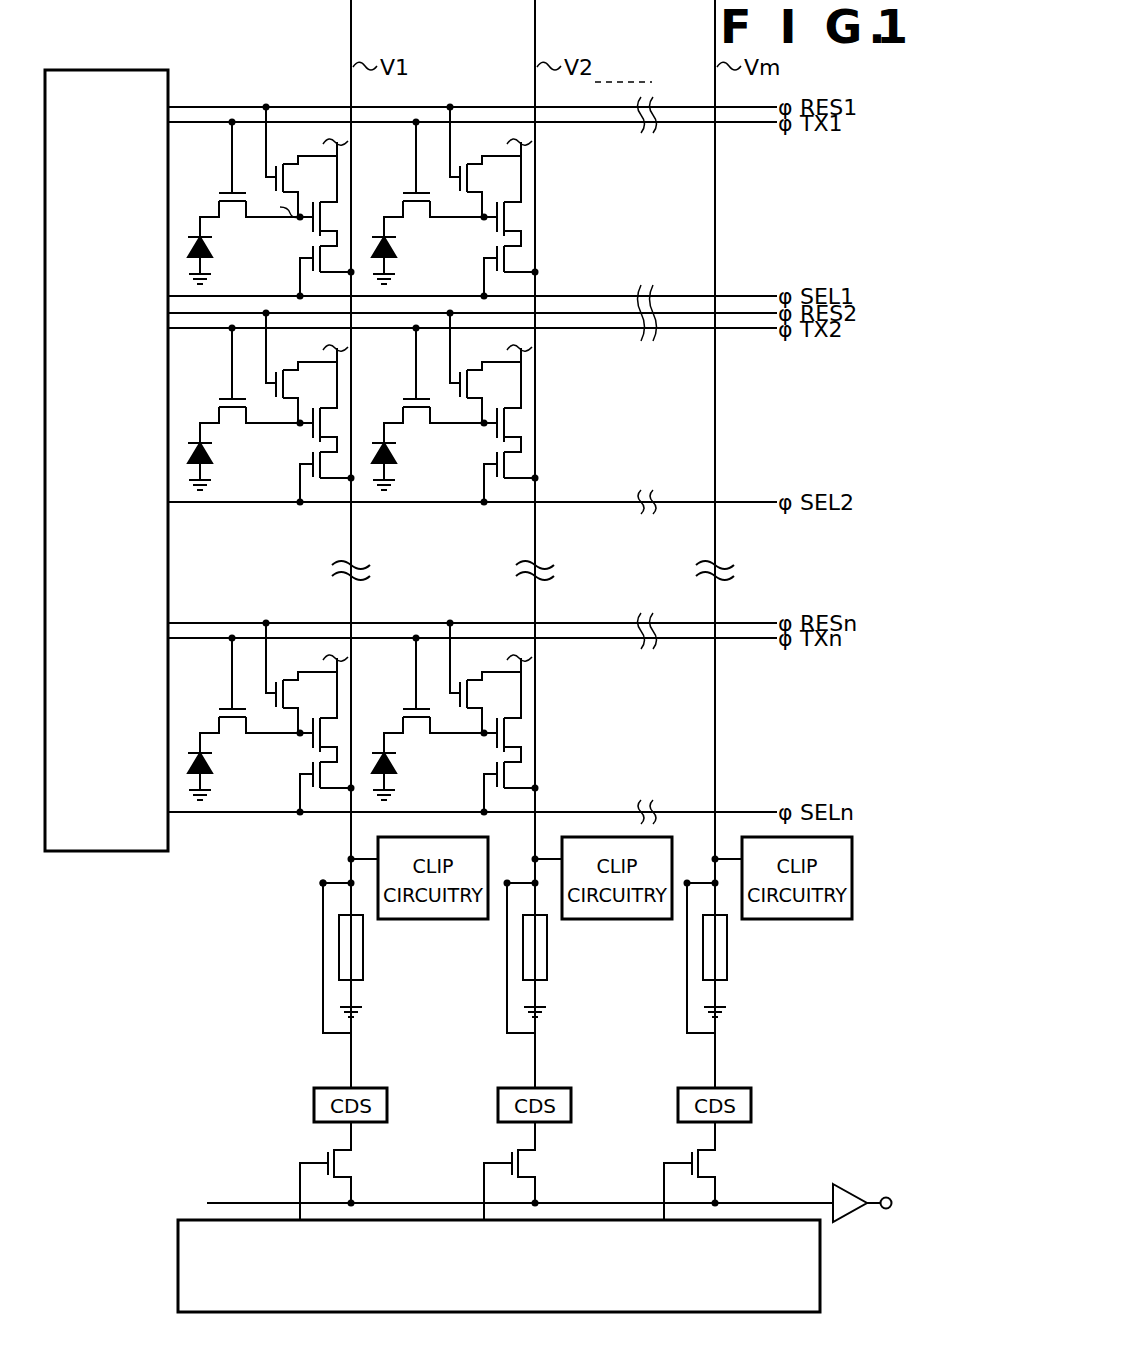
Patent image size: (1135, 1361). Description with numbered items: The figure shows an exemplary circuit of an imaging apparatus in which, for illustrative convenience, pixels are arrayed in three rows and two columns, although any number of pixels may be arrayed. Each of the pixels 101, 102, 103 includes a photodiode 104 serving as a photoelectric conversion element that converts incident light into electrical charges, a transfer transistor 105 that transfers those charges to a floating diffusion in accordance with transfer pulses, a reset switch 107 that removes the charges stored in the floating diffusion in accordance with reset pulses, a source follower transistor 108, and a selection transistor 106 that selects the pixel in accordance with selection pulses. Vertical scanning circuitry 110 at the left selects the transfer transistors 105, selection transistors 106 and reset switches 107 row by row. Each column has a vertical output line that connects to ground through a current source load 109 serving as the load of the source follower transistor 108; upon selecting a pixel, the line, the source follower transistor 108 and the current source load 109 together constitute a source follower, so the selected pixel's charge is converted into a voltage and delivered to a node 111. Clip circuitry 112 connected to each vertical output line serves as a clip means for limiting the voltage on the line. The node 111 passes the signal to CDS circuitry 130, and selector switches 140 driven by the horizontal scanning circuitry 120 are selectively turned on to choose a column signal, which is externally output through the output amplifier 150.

The pixel 101 is at (288, 202).
The pixel 102 is at (338, 424).
The pixel 103 is at (338, 734).
The photodiode 104 is at (211, 244).
The transfer transistor 105 is at (220, 193).
The selection transistor 106 is at (316, 250).
The reset switch 107 is at (306, 161).
The source follower transistor 108 is at (316, 233).
The current source load 109 is at (364, 947).
The vertical scanning circuitry 110 is at (117, 853).
The node 111 is at (320, 882).
The clip circuitry 112 is at (460, 919).
The horizontal scanning circuitry 120 is at (176, 1262).
The CDS circuitry 130 is at (312, 1103).
The selector switch 140 is at (325, 1149).
The output amplifier 150 is at (858, 1185).